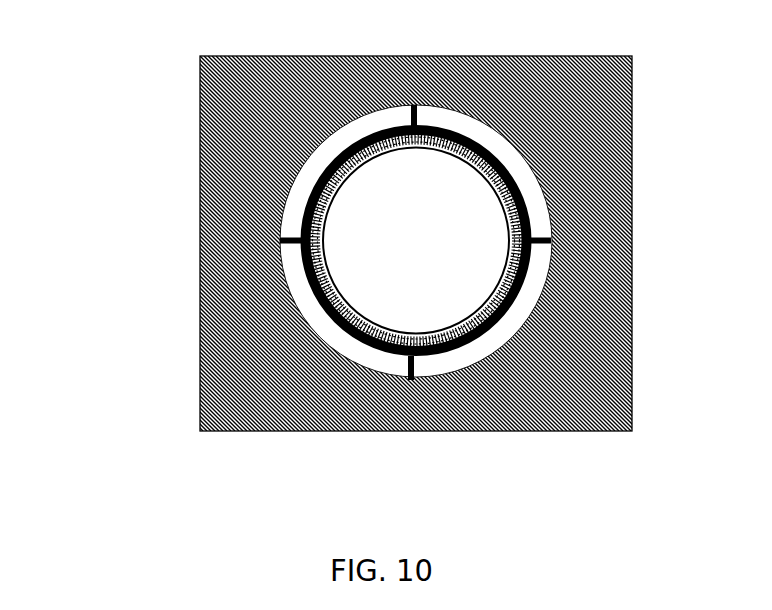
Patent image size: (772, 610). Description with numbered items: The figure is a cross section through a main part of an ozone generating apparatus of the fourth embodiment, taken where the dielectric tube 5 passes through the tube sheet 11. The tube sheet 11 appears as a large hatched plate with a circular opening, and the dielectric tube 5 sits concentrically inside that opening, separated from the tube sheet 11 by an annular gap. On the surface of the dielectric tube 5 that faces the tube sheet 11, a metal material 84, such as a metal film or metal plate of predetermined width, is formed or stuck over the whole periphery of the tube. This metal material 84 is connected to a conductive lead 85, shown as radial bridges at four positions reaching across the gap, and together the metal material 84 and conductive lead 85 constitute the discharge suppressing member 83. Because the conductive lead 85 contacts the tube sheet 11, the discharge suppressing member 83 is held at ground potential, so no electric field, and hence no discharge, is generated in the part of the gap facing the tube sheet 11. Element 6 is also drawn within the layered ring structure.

The tube sheet 11 is at (603, 97).
The discharge suppressing member 83 is at (50, 192).
The metal material 84 is at (284, 193).
The conductive lead 85 is at (287, 222).
The dielectric tube 5 is at (518, 194).
The sealing member 6 is at (513, 288).